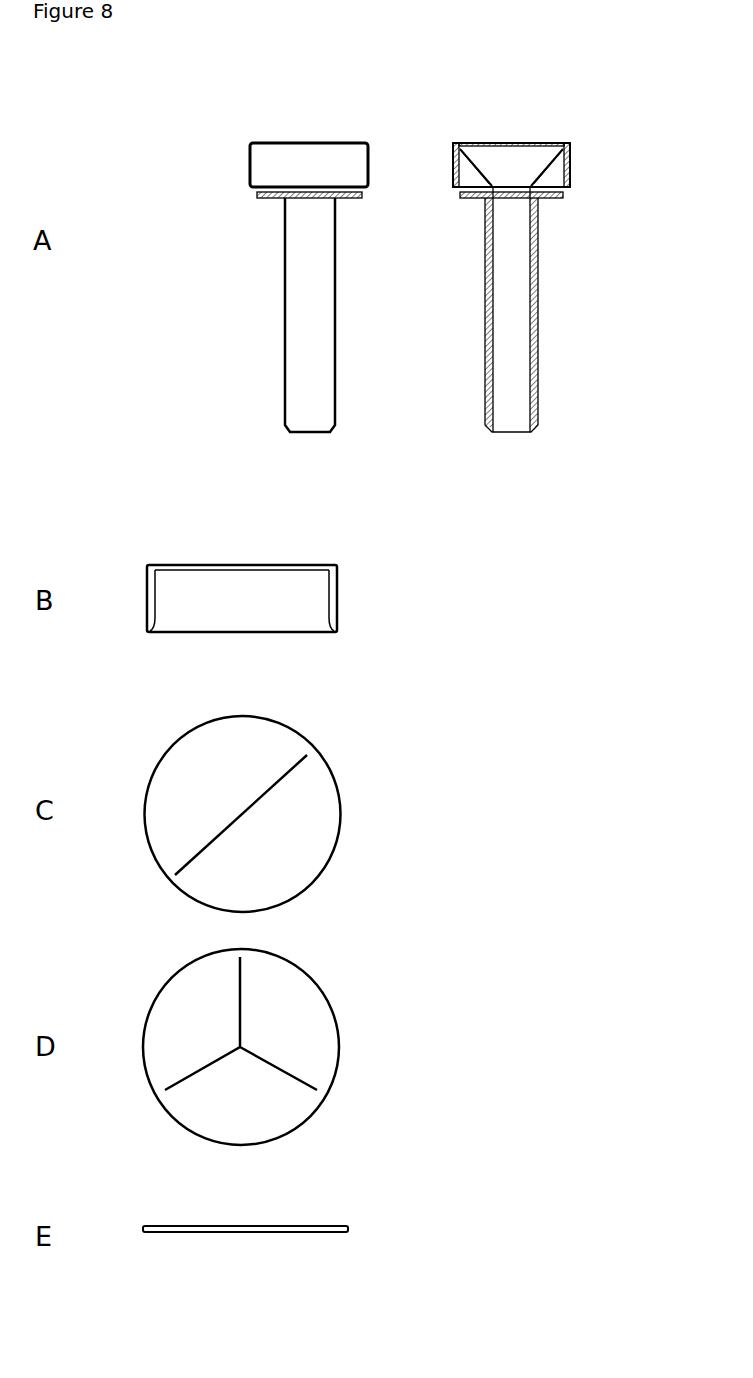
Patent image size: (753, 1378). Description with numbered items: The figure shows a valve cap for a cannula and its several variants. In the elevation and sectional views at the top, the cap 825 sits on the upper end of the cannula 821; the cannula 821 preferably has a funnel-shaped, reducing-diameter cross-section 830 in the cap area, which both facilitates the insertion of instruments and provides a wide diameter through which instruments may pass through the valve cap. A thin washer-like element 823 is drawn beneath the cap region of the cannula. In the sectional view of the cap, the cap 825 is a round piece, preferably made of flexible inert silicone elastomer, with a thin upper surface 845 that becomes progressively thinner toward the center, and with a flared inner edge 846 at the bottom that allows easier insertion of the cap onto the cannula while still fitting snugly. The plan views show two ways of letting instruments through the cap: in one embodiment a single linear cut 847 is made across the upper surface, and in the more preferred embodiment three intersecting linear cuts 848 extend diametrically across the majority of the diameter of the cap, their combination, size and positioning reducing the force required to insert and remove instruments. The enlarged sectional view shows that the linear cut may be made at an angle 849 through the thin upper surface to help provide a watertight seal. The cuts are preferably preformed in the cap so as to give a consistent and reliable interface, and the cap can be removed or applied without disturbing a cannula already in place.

In FIG. 8A, the cannula 821 is at (538, 313).
In FIG. 8A, the washer 823 is at (568, 198).
In FIG. 8A, the cap 825 is at (298, 142).
In FIG. 8A, the funnel-shaped cross-section 830 is at (540, 170).
In FIG. 8B, the thin upper surface 845 is at (312, 560).
In FIG. 8B, the flared inner edge 846 is at (155, 620).
In FIG. 8C, the linear cut 847 is at (255, 807).
In FIG. 8D, the intersecting linear cuts 848 is at (242, 1003).
In FIG. 8E, the angle 849 is at (250, 1233).